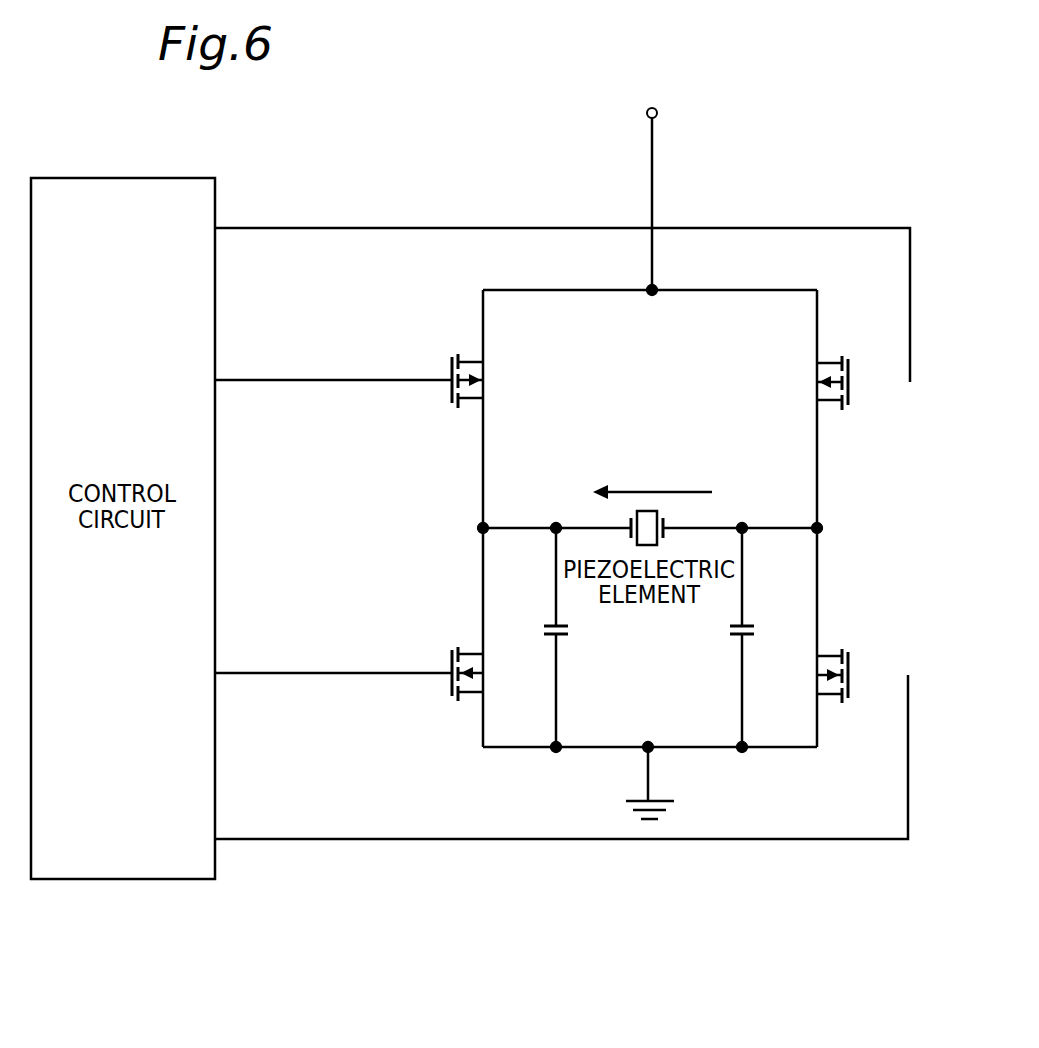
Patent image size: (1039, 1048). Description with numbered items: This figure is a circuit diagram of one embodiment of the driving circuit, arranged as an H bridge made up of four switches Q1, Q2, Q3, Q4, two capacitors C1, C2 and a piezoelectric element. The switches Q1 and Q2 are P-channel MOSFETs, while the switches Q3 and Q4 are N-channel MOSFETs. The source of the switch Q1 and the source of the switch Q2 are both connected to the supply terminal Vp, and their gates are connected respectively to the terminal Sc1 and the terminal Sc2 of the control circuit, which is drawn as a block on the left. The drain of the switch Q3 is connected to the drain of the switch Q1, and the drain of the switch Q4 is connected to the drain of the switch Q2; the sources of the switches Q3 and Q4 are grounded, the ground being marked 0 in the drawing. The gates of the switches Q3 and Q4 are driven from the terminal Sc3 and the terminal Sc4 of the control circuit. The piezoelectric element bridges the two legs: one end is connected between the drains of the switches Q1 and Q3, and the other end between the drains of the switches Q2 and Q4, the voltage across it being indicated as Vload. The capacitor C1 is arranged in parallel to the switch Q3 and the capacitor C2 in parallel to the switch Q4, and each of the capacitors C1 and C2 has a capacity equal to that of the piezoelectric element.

The switch Q1 is at (451, 368).
The switch Q2 is at (849, 367).
The switch Q3 is at (451, 690).
The switch Q4 is at (849, 691).
The capacitor C1 is at (576, 637).
The capacitor C2 is at (724, 637).
The terminal of the control circuit Sc1 is at (333, 362).
The terminal of the control circuit Sc2 is at (562, 287).
The terminal of the control circuit Sc3 is at (333, 655).
The terminal of the control circuit Sc4 is at (561, 757).
The terminal Vp is at (677, 196).
The load voltage Vload is at (652, 481).
The ground 0 is at (658, 787).